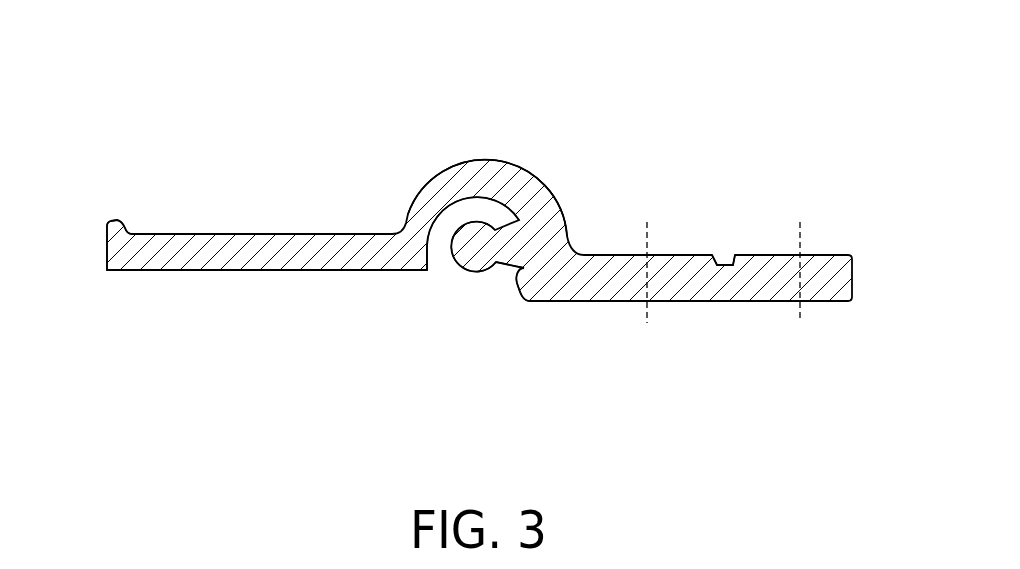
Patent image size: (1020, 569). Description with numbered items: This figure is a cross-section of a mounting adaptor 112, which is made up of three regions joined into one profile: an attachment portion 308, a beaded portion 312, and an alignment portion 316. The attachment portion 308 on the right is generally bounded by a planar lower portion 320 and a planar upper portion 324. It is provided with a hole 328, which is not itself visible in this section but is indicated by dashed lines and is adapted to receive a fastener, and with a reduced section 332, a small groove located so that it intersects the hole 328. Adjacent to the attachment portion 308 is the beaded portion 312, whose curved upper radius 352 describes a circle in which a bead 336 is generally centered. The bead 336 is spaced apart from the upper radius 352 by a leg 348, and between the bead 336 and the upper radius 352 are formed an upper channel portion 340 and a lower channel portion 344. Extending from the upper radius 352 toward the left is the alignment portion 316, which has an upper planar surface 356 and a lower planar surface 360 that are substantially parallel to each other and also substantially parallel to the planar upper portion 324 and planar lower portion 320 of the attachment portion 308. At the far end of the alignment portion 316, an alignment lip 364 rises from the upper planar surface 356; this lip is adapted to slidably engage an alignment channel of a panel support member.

The mounting adaptor 112 is at (510, 41).
The attachment portion 308 is at (685, 322).
The beaded portion 312 is at (456, 314).
The alignment portion 316 is at (175, 304).
The planar lower portion 320 is at (817, 302).
The planar upper portion 324 is at (823, 257).
The hole 328 is at (649, 263).
The reduced section 332 is at (722, 262).
The bead 336 is at (460, 249).
The upper channel portion 340 is at (478, 210).
The lower channel portion 344 is at (508, 273).
The leg 348 is at (505, 267).
The upper radius 352 is at (448, 172).
The upper planar surface 356 is at (223, 233).
The lower planar surface 360 is at (240, 272).
The alignment lip 364 is at (118, 222).